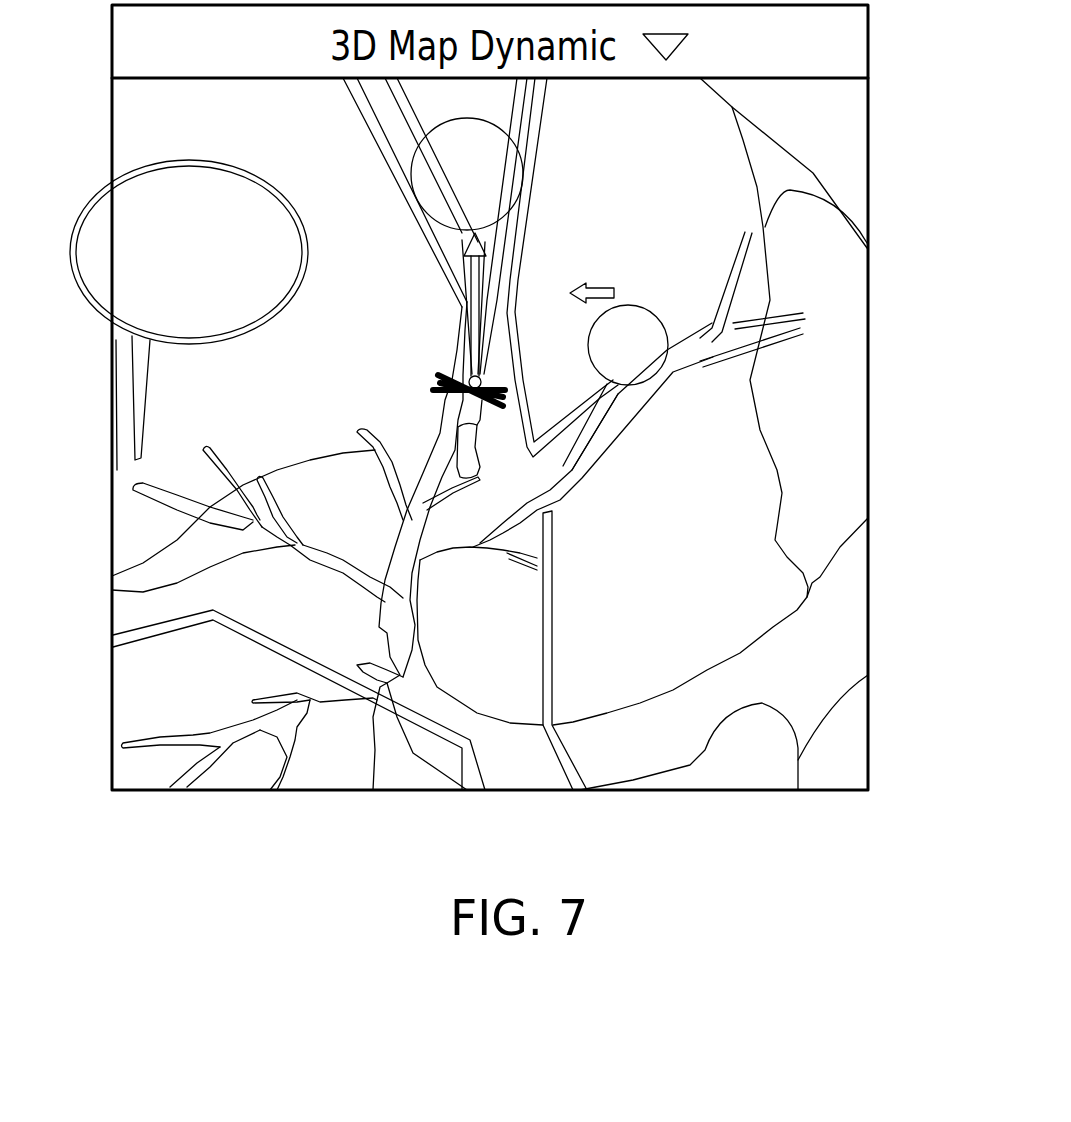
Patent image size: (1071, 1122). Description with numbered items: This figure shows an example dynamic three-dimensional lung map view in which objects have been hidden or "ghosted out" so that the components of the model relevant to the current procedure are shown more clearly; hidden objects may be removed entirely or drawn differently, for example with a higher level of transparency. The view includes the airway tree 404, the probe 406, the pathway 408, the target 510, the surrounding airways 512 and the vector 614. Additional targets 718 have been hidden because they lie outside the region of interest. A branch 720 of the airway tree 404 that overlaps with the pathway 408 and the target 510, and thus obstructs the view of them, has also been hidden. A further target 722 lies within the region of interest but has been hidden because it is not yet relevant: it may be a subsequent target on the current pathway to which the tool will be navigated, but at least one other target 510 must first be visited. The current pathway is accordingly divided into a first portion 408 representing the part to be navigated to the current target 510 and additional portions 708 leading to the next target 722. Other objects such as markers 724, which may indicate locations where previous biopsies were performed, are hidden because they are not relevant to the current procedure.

The airway tree 404 is at (750, 733).
The probe 406 is at (470, 467).
The pathway 408 is at (432, 470).
The target 510 is at (505, 164).
The surrounding airways 512 is at (128, 588).
The vector 614 is at (478, 302).
The additional portions 708 is at (607, 393).
The additional targets 718 is at (138, 310).
The branch 720 is at (377, 128).
The target 722 is at (650, 339).
The markers 724 is at (608, 291).